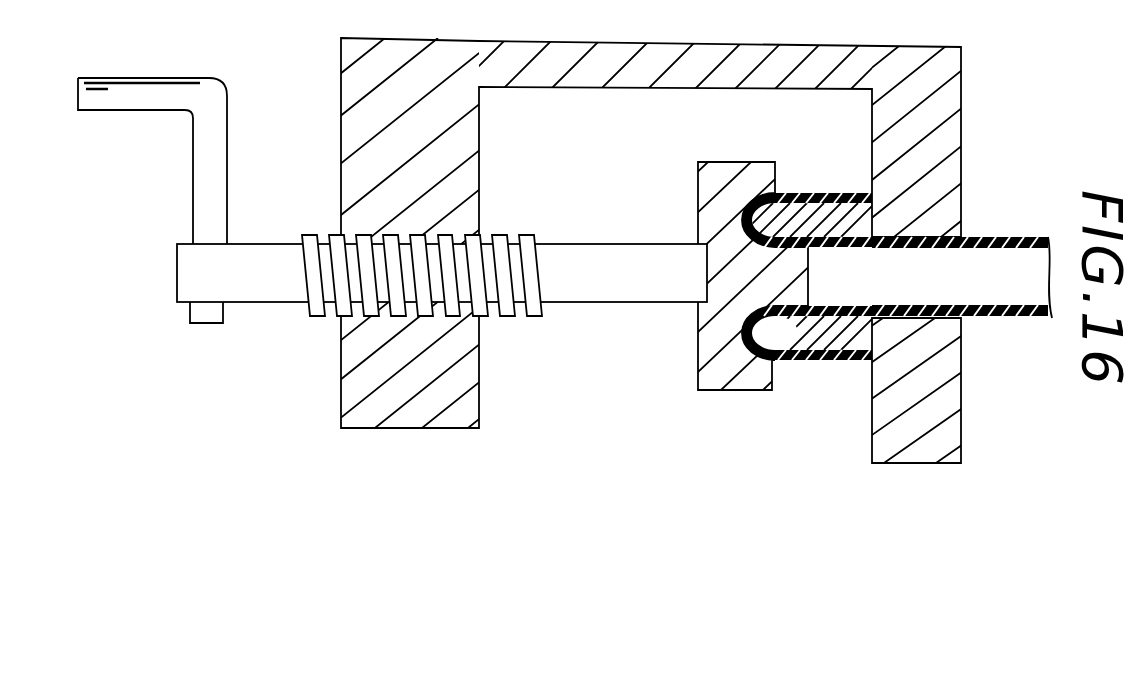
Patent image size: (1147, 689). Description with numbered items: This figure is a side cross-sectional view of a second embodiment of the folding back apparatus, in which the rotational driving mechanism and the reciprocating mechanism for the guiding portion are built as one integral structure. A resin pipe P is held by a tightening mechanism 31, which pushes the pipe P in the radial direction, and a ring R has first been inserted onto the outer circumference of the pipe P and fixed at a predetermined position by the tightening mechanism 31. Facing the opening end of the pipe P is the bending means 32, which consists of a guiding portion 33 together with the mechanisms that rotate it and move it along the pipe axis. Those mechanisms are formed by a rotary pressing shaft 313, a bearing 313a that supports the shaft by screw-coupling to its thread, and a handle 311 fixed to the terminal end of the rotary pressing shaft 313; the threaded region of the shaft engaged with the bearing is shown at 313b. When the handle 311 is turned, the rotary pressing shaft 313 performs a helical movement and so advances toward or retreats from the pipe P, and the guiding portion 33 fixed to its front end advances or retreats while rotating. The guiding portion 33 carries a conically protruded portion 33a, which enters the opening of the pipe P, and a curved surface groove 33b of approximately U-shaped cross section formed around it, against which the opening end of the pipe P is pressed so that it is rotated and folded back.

The tightening mechanism 31 is at (872, 465).
The bending means 32 is at (455, 490).
The guiding portion 33 is at (707, 392).
The conically protruded portion 33a is at (810, 277).
The curved surface groove 33b is at (770, 370).
The handle 311 is at (193, 165).
The rotary pressing shaft 313 is at (277, 303).
The bearing 313a is at (367, 430).
The coil winding 313b is at (512, 320).
The ring R is at (865, 360).
The resin pipe P is at (1027, 237).